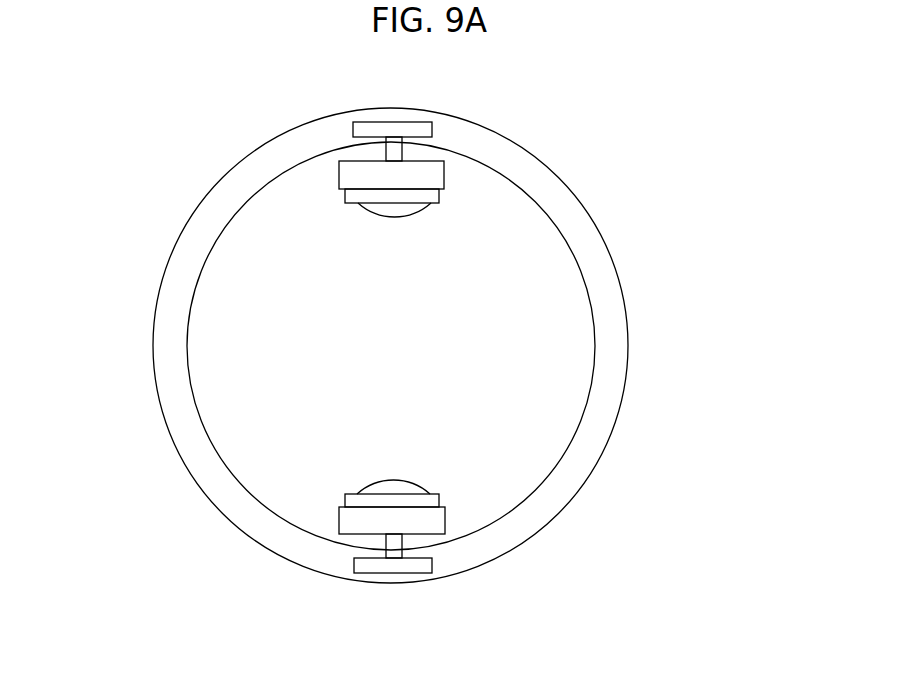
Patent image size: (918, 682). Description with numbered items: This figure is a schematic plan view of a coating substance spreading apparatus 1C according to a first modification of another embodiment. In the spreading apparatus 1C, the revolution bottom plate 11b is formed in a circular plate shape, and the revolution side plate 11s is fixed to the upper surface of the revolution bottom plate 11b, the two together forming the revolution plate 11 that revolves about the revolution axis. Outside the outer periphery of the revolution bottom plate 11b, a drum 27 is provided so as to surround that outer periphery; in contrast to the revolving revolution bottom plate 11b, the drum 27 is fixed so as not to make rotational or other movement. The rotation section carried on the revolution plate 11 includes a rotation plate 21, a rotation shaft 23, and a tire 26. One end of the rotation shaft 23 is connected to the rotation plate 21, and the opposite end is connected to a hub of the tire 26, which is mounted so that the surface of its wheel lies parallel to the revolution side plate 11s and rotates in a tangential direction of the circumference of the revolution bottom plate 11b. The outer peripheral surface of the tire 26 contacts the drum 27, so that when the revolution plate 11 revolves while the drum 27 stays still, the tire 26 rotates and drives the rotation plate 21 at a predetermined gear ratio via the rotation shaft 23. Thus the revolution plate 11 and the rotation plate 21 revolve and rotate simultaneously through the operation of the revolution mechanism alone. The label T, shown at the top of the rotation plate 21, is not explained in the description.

The spreading apparatus 1C is at (142, 85).
The revolution plate 11 is at (123, 520).
The revolution bottom plate 11b is at (268, 479).
The revolution side plate 11s is at (339, 517).
The rotation plate 21 is at (489, 458).
The rotation shaft 23 is at (405, 540).
The tire 26 is at (415, 573).
The drum 27 is at (525, 522).
The light emitting element T is at (400, 478).